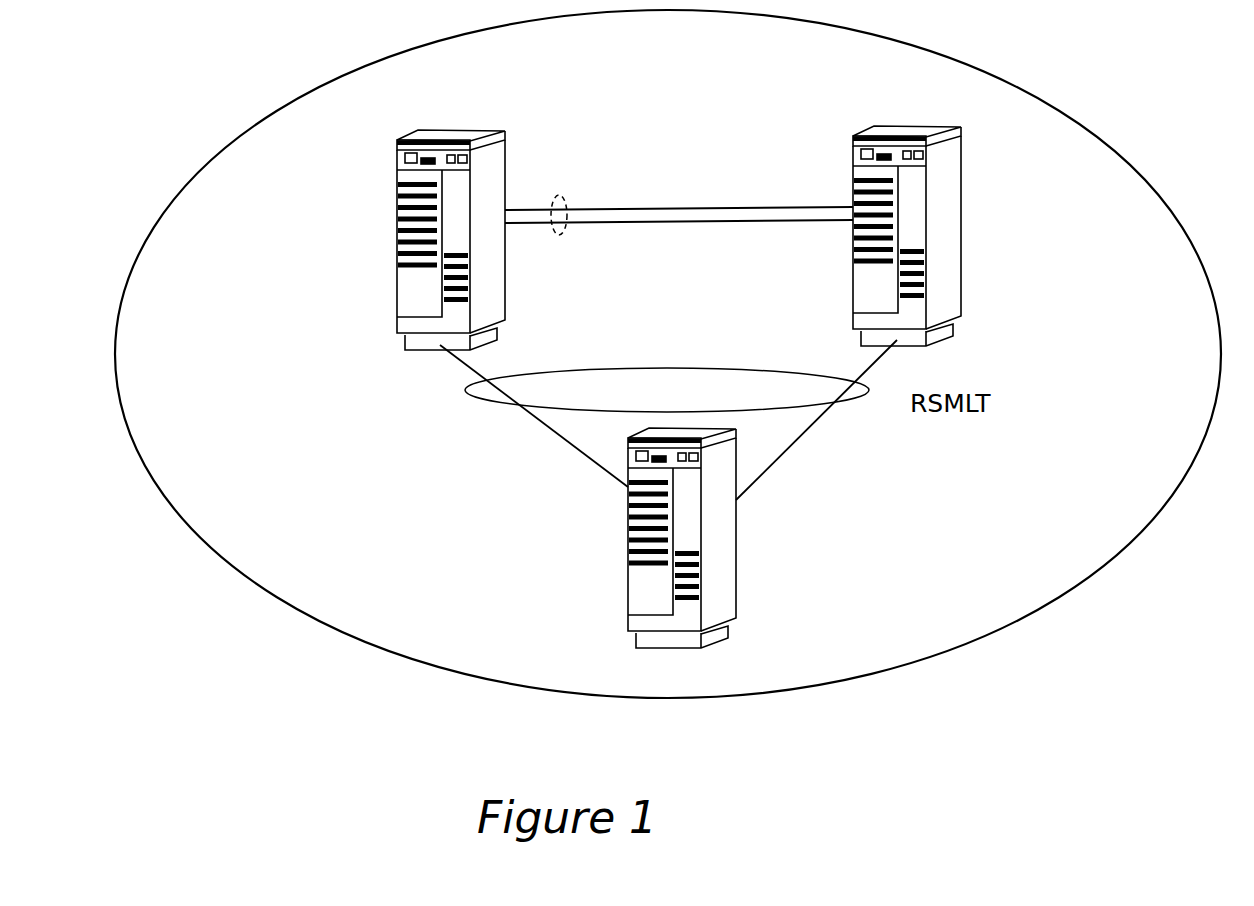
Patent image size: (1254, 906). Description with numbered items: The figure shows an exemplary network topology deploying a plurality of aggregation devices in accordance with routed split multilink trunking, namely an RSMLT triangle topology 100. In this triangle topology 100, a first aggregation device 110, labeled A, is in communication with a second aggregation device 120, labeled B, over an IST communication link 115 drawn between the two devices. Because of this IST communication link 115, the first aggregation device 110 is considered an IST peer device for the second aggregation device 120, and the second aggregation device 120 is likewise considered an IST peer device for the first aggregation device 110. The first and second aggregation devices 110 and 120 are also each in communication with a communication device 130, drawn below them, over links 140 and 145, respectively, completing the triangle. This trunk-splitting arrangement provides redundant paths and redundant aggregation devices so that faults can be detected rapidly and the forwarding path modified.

The triangle topology 100 is at (1172, 395).
The first aggregation device 110 is at (343, 207).
The second aggregation device 120 is at (993, 182).
The communication device 130 is at (602, 597).
The IST communication link 115 is at (722, 196).
The link 140 is at (565, 440).
The link 145 is at (795, 445).